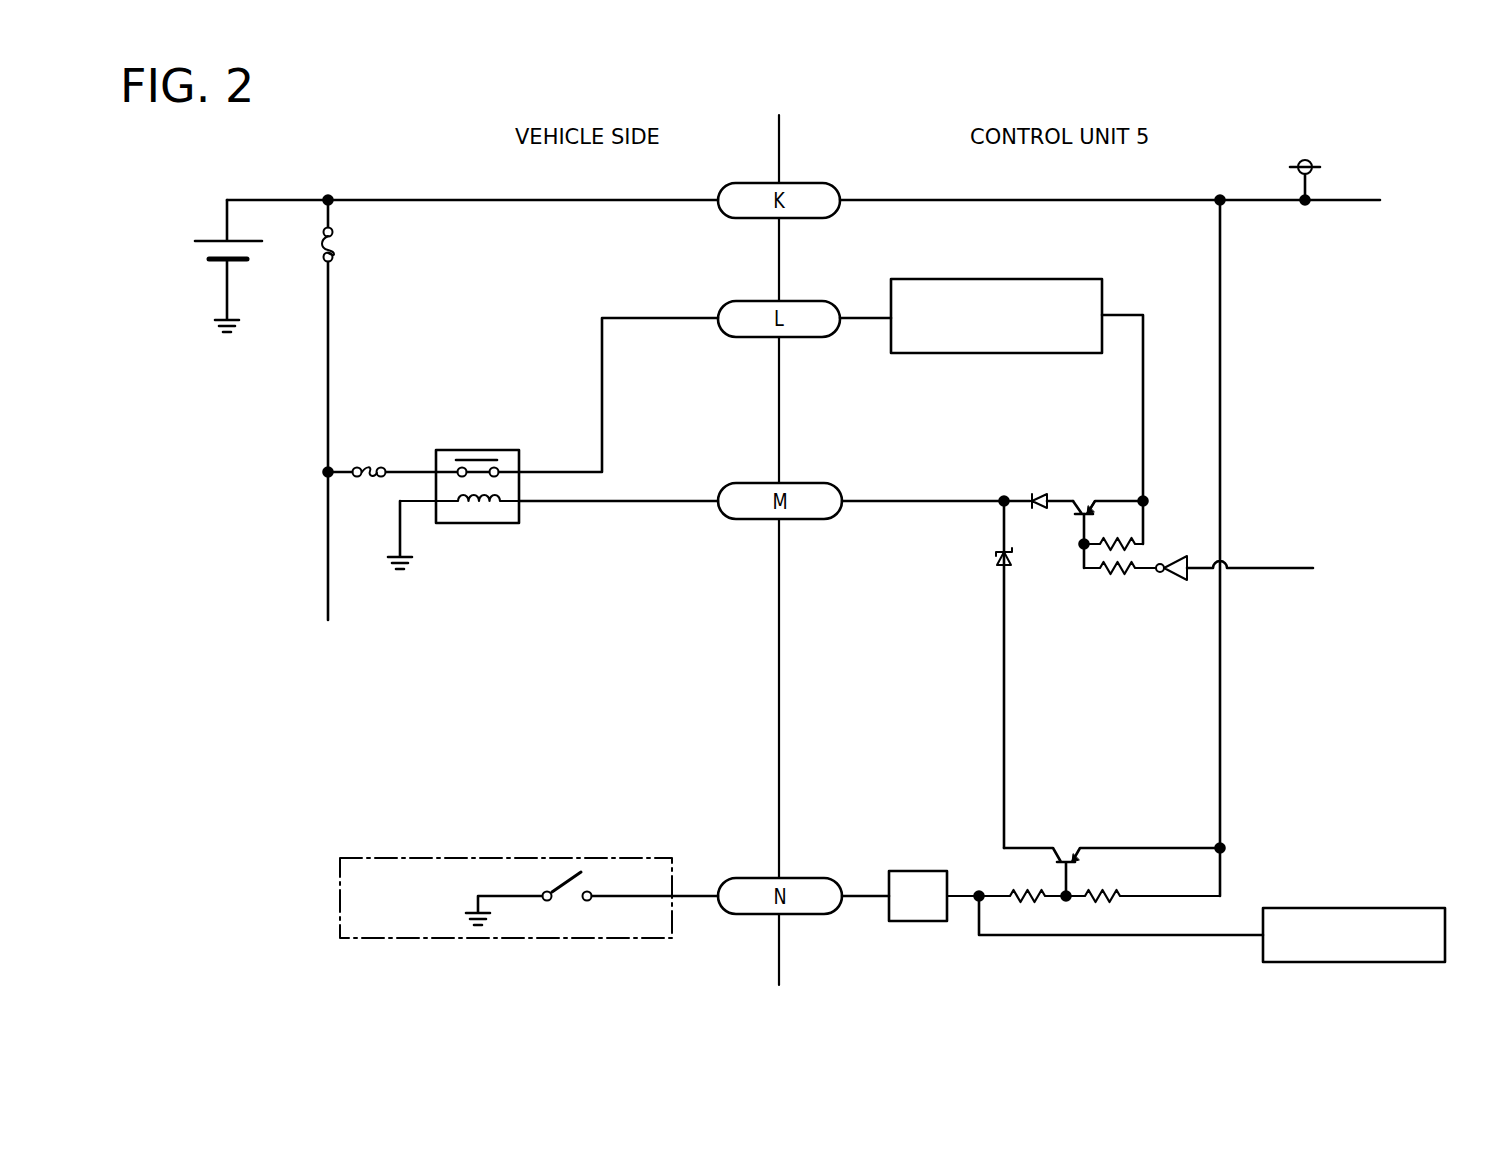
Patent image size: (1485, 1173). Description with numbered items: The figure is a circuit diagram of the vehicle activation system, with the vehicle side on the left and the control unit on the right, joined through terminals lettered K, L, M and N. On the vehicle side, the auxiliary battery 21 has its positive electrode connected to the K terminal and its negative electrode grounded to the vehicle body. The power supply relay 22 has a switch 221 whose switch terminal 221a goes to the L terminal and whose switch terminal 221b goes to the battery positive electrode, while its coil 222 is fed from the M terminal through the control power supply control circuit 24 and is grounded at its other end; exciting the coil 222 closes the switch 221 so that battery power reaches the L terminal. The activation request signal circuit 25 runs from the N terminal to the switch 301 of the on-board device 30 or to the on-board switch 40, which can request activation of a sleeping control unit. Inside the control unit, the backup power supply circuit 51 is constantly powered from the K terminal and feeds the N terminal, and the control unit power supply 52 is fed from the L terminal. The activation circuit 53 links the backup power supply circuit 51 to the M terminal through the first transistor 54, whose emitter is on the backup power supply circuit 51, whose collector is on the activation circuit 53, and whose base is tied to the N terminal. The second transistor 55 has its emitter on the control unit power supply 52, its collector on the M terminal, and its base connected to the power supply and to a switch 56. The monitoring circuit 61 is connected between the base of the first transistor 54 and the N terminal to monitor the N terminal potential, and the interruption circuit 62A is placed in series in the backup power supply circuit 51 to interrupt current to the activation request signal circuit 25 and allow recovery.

The auxiliary battery 21 is at (198, 255).
The power supply relay 22 is at (521, 451).
The switch 221 is at (480, 458).
The switch terminal 221a is at (498, 466).
The switch terminal 221b is at (460, 466).
The coil 222 is at (478, 504).
The control power supply control circuit 24 is at (651, 500).
The activation request signal circuit 25 is at (703, 893).
The on-board device 30 is at (506, 858).
The switch 301 is at (533, 859).
The on-board switch 40 is at (563, 880).
The backup power supply circuit 51 is at (1258, 202).
The control unit power supply 52 is at (1032, 279).
The activation circuit 53 is at (1003, 720).
The first transistor 54 is at (1076, 848).
The second transistor 55 is at (1089, 512).
The switch 56 is at (1176, 564).
The monitoring circuit 61 is at (1374, 908).
The interruption circuit 62A is at (918, 871).